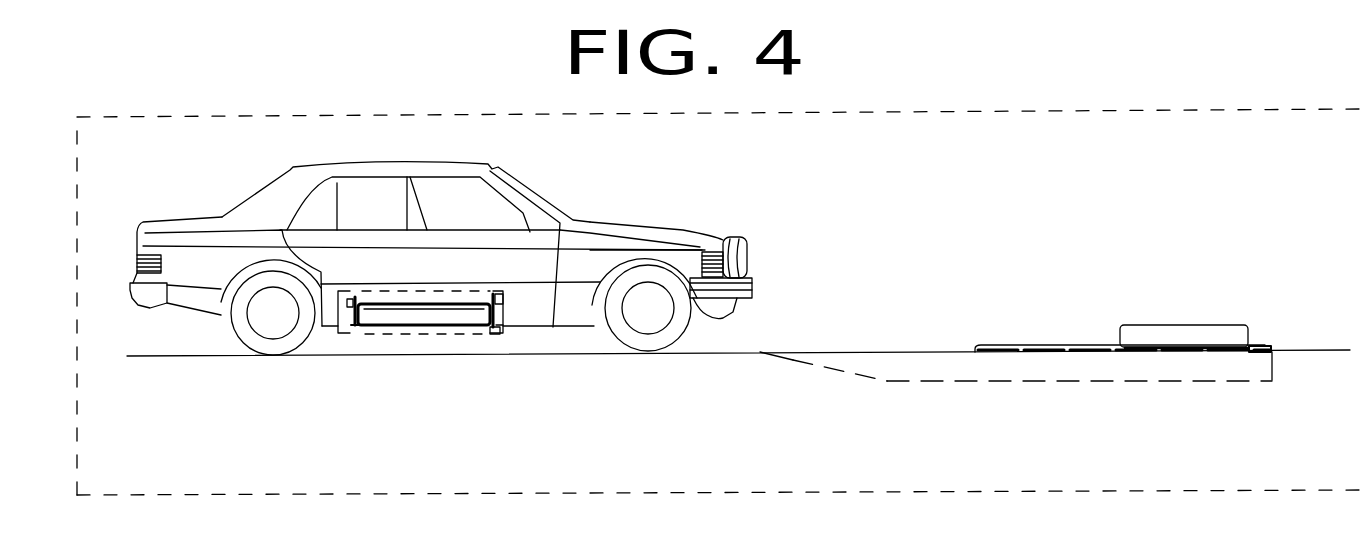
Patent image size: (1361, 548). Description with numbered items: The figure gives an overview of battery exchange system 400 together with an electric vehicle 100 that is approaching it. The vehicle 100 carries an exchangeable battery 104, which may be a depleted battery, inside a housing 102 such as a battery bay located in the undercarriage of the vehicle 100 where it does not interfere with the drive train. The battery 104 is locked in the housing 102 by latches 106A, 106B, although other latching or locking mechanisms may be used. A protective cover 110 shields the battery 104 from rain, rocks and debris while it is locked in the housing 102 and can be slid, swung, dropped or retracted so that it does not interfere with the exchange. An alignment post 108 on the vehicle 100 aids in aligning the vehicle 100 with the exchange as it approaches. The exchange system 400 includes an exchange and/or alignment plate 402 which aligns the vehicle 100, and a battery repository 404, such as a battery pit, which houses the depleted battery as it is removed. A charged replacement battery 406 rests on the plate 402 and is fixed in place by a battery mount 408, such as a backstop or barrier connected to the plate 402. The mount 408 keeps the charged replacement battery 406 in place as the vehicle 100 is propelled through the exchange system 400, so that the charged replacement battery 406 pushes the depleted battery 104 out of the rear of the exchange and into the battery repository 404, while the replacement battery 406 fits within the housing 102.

The electric vehicle 100 is at (238, 206).
The housing 102 is at (363, 336).
The exchangeable battery 104 is at (428, 315).
The latch 106A is at (354, 297).
The latch 106B is at (496, 294).
The alignment post 108 is at (500, 324).
The protective cover 110 is at (370, 327).
The battery exchange system 400 is at (423, 495).
The exchange and/or alignment plate 402 is at (1087, 352).
The battery repository 404 is at (910, 368).
The charged replacement battery 406 is at (1173, 337).
The battery mount 408 is at (1250, 335).